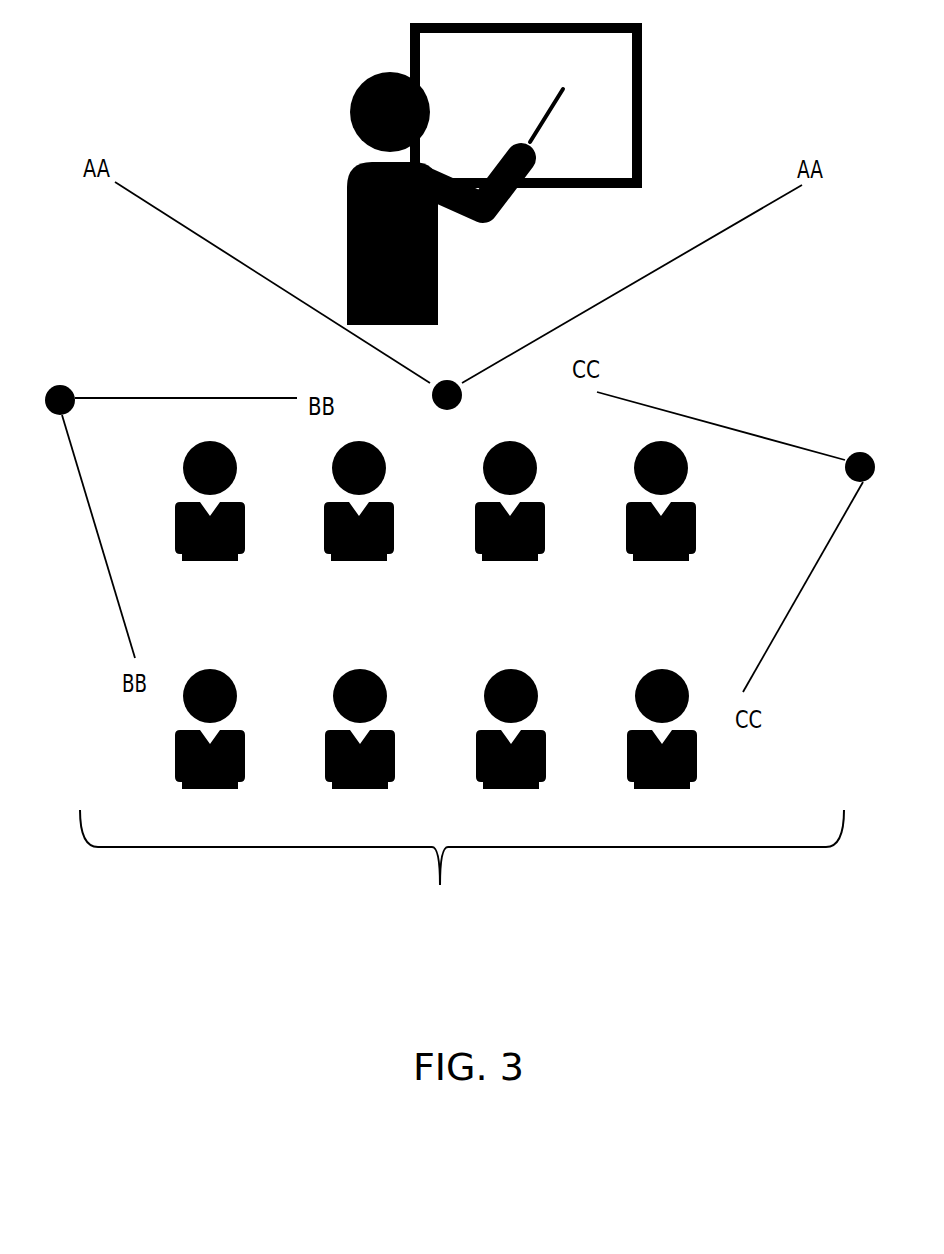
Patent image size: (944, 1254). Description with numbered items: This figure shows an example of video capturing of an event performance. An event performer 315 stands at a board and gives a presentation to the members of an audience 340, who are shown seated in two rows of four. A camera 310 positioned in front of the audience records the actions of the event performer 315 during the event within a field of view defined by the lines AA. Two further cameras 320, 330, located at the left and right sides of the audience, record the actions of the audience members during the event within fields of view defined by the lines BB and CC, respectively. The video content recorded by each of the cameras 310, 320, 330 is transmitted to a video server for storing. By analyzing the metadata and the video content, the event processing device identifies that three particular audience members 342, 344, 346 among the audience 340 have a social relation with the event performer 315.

The event performer 315 is at (345, 100).
The camera 310 is at (432, 385).
The camera 320 is at (50, 389).
The camera 330 is at (868, 452).
The audience 340 is at (462, 669).
The audience member 342 is at (235, 687).
The audience member 344 is at (648, 672).
The audience member 346 is at (442, 445).